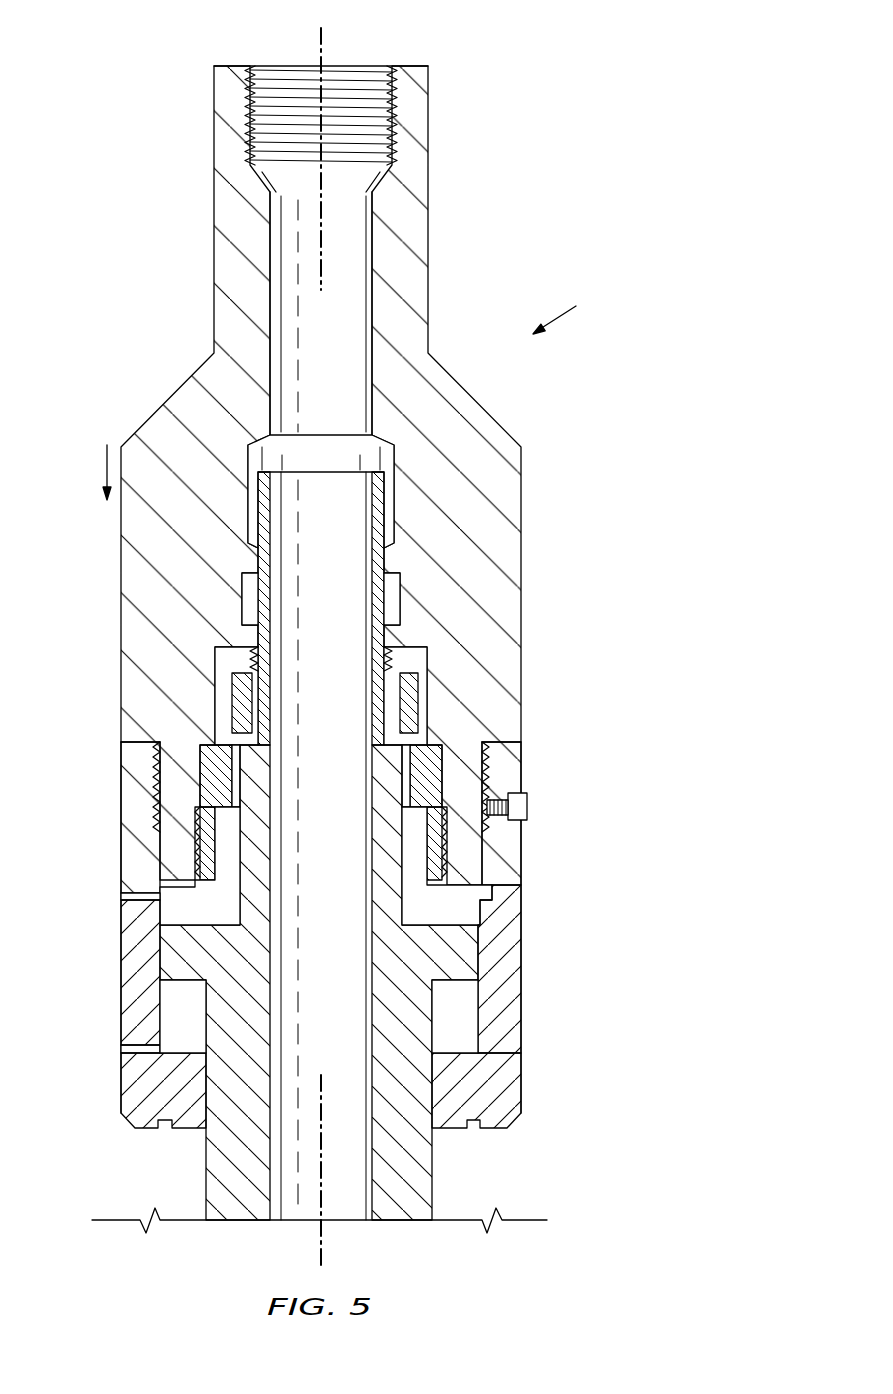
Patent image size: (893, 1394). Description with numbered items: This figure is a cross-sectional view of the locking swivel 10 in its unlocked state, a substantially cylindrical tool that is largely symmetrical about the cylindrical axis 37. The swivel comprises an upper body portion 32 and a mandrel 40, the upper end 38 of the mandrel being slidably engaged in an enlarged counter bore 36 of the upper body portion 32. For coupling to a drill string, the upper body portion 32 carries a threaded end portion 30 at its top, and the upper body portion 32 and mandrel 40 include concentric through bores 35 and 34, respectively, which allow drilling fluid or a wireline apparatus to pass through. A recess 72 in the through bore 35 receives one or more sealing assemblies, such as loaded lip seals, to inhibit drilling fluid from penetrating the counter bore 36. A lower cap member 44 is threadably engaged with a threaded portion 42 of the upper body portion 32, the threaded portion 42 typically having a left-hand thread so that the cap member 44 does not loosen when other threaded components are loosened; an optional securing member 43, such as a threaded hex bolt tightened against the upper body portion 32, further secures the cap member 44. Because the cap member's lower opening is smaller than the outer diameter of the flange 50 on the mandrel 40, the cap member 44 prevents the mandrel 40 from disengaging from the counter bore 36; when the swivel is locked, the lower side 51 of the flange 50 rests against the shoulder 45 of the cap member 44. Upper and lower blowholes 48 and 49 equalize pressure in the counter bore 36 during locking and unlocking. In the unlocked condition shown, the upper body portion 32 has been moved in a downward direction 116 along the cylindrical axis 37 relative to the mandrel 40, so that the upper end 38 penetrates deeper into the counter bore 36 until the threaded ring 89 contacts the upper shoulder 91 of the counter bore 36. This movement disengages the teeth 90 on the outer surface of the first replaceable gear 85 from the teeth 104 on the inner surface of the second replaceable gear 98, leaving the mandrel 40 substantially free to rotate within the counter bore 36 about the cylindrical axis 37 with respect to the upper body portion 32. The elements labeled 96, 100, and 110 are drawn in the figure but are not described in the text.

The locking swivel 10 is at (555, 307).
The threaded end portion 30 is at (400, 103).
The upper body portion 32 is at (523, 531).
The through bore 34 is at (372, 945).
The through bore 35 is at (372, 343).
The enlarged counter bore 36 is at (432, 670).
The cylindrical axis 37 is at (321, 45).
The upper end 38 is at (384, 525).
The mandrel 40 is at (208, 1168).
The threaded portion 42 is at (150, 820).
The securing member 43 is at (528, 805).
The cap member 44 is at (125, 1095).
The shoulder 45 is at (190, 1052).
The upper blowhole 48 is at (125, 897).
The lower blowhole 49 is at (125, 1048).
The flange 50 is at (470, 955).
The lower side 51 is at (448, 981).
The recess 72 is at (384, 620).
The first replaceable gear 85 is at (240, 707).
The threaded ring 89 is at (386, 671).
The teeth 90 is at (425, 710).
The upper shoulder 91 is at (232, 655).
The nut 96 is at (488, 770).
The second replaceable gear 98 is at (200, 795).
The ring 100 is at (236, 770).
The teeth 104 is at (420, 780).
The threaded section 110 is at (440, 845).
The downward direction 116 is at (106, 466).